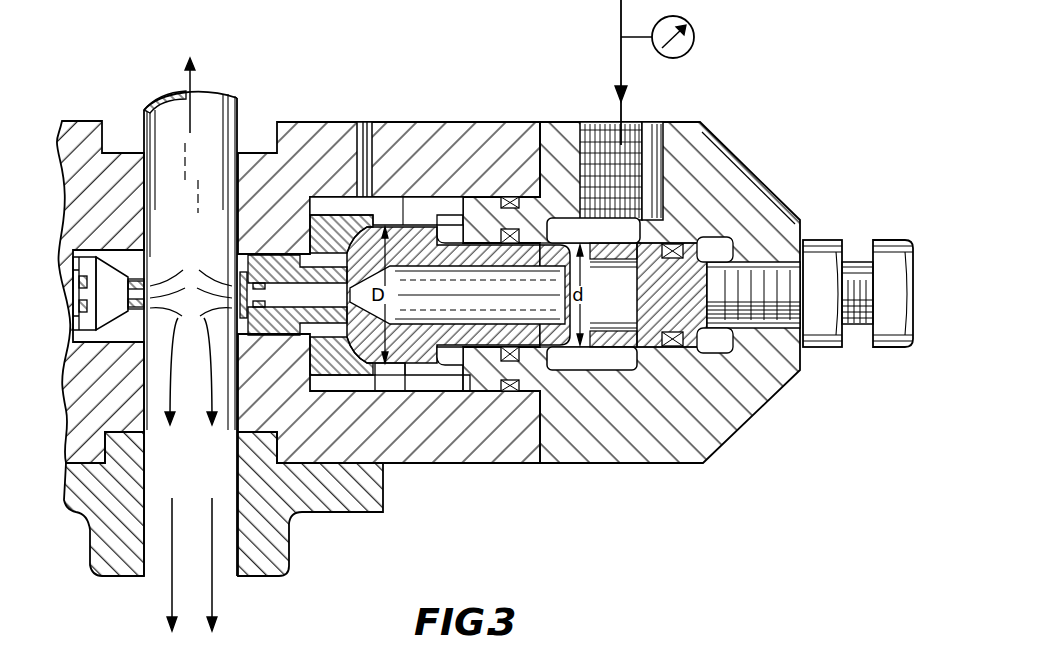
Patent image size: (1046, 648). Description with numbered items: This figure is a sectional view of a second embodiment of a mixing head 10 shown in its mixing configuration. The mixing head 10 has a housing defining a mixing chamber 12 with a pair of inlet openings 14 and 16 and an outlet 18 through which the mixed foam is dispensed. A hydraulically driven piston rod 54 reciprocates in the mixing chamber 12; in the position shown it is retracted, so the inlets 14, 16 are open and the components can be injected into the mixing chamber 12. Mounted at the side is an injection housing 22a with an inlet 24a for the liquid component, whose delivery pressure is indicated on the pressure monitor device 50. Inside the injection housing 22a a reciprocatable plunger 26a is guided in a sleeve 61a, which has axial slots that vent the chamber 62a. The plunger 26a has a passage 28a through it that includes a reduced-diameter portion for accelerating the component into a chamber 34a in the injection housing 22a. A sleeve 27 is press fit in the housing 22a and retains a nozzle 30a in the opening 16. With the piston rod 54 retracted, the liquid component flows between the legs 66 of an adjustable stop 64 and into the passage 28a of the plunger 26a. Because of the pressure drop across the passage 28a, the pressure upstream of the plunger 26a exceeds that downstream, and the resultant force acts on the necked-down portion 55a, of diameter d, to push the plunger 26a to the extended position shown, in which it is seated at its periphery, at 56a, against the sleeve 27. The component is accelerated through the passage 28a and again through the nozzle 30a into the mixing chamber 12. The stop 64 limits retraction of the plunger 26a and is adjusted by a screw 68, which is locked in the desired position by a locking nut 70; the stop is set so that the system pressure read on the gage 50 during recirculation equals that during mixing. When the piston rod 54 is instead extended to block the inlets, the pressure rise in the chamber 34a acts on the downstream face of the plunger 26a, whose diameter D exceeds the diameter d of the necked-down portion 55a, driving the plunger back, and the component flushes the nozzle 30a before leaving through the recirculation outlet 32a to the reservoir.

The mixing head 10 is at (362, 516).
The mixing chamber 12 is at (155, 362).
The inlet opening 14 is at (168, 268).
The inlet opening 16 is at (232, 270).
The outlet 18 is at (230, 576).
The injection housing 22a is at (558, 463).
The inlet 24a is at (655, 125).
The plunger 26a is at (432, 370).
The sleeve 27 is at (100, 268).
The passage 28a is at (540, 325).
The nozzle 30a is at (266, 262).
The recirculation outlet 32a is at (366, 125).
The chamber 34a is at (291, 327).
The pressure monitor device 50 is at (696, 37).
The piston rod 54 is at (154, 182).
The necked-down portion 55a is at (567, 263).
The seat 56a is at (356, 352).
The sleeve 61a is at (416, 380).
The chamber 62a is at (453, 362).
The adjustable stop 64 is at (690, 347).
The legs 66 is at (630, 332).
The screw 68 is at (858, 330).
The locking nut 70 is at (818, 242).